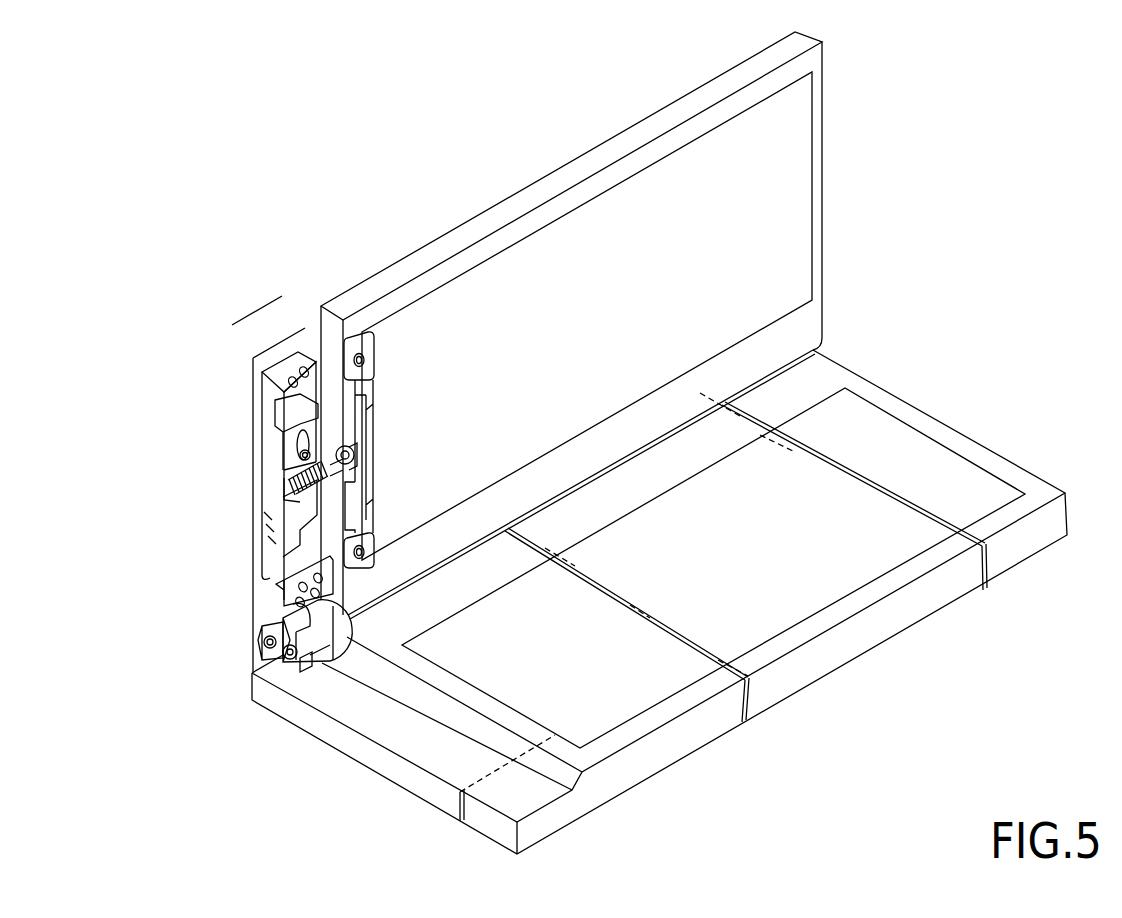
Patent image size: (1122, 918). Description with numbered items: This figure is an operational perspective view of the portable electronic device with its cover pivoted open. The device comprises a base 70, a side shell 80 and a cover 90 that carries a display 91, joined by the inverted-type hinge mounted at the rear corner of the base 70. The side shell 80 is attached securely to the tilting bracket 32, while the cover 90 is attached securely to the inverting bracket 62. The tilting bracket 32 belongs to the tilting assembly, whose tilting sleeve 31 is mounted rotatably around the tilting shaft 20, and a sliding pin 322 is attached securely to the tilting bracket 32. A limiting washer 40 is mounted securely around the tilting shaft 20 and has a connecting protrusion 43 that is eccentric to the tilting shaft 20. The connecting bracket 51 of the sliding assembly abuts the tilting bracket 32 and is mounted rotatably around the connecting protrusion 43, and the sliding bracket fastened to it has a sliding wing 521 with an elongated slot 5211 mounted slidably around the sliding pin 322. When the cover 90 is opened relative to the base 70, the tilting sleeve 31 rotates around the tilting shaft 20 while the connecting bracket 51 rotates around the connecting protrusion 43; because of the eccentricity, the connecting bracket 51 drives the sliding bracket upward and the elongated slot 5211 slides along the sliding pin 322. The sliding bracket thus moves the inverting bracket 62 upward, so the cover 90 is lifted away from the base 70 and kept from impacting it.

The tilting shaft 20 is at (283, 660).
The tilting sleeve 31 is at (292, 662).
The tilting bracket 32 is at (282, 452).
The sliding pin 322 is at (300, 455).
The limiting washer 40 is at (277, 660).
The connecting protrusion 43 is at (268, 645).
The connecting bracket 51 is at (278, 628).
The sliding wing 521 is at (290, 402).
The elongated slot 5211 is at (307, 455).
The inverting bracket 62 is at (372, 356).
The base 70 is at (880, 633).
The side shell 80 is at (265, 345).
The cover 90 is at (757, 56).
The display 91 is at (800, 163).